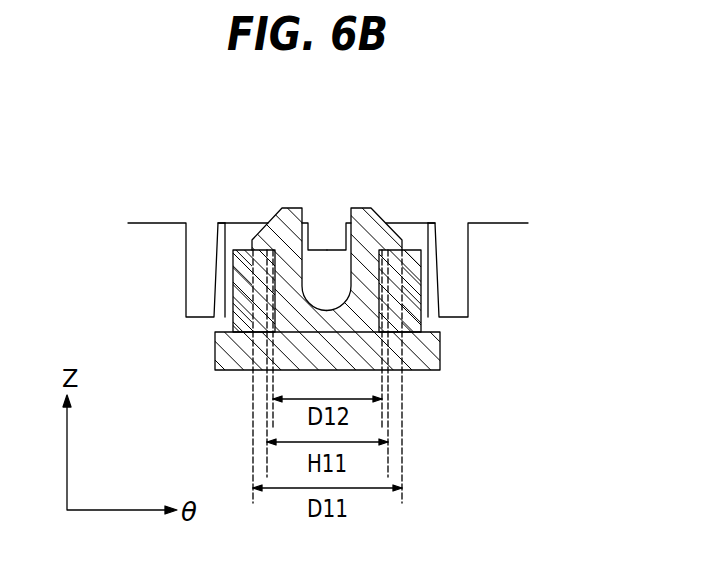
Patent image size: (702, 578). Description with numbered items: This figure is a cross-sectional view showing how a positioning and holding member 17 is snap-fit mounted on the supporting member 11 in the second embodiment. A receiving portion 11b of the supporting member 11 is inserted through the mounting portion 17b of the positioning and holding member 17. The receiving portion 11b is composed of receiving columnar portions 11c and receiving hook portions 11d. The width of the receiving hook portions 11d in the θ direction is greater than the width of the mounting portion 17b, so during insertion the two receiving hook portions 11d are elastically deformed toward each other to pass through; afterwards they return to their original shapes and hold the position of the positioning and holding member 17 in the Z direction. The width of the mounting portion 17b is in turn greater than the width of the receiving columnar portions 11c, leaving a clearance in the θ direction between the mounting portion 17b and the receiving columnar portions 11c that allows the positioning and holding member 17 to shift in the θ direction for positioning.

The supporting member 11 is at (420, 357).
The receiving portion 11b is at (336, 189).
The receiving columnar portion 11c is at (365, 273).
The receiving hook portion 11d is at (375, 220).
The positioning and holding member 17 is at (413, 251).
The mounting portion 17b is at (388, 300).